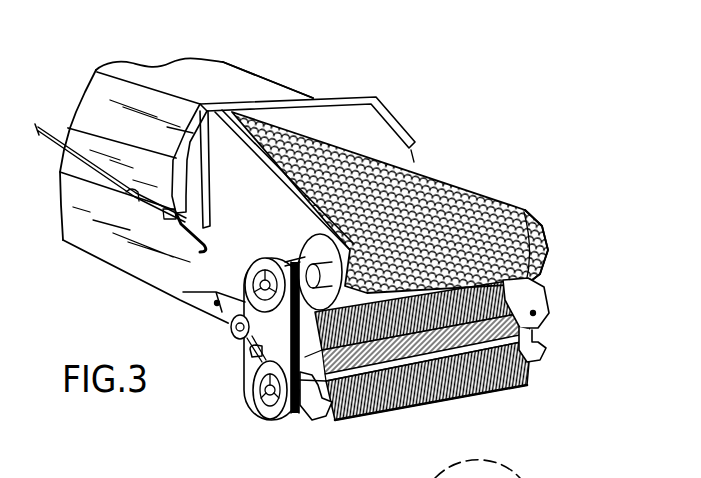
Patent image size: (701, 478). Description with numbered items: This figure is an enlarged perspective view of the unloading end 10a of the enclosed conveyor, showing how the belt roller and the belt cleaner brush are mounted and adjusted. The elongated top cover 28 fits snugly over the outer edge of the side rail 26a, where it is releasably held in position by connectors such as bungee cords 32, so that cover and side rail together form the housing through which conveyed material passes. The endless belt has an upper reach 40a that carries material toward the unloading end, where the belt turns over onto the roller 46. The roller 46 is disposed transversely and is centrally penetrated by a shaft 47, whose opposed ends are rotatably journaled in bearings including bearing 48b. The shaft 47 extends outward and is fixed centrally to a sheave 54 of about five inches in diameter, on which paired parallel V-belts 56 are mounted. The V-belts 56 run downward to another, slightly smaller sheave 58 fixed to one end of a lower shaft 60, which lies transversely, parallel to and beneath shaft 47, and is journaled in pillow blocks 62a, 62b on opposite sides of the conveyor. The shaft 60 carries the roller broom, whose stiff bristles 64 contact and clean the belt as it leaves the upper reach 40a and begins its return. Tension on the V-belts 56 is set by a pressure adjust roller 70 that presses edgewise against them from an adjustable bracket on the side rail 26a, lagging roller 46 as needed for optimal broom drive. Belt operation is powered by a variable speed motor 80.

The unloading end 10a is at (458, 103).
The side rail 26a is at (107, 245).
The top cover 28 is at (263, 87).
The bungee cords 32 is at (320, 97).
The upper reach 40a is at (460, 177).
The bearing 48b is at (538, 240).
The roller 46 is at (250, 287).
The shaft 47 is at (233, 303).
The sheave 54 is at (240, 333).
The V-belts 56 is at (303, 407).
The sheave 58 is at (277, 417).
The shaft 60 is at (260, 395).
The pillow block 62a is at (320, 407).
The pillow block 62b is at (533, 343).
The bristles 64 is at (447, 397).
The pressure adjust roller 70 is at (250, 347).
The variable speed motor 80 is at (527, 477).